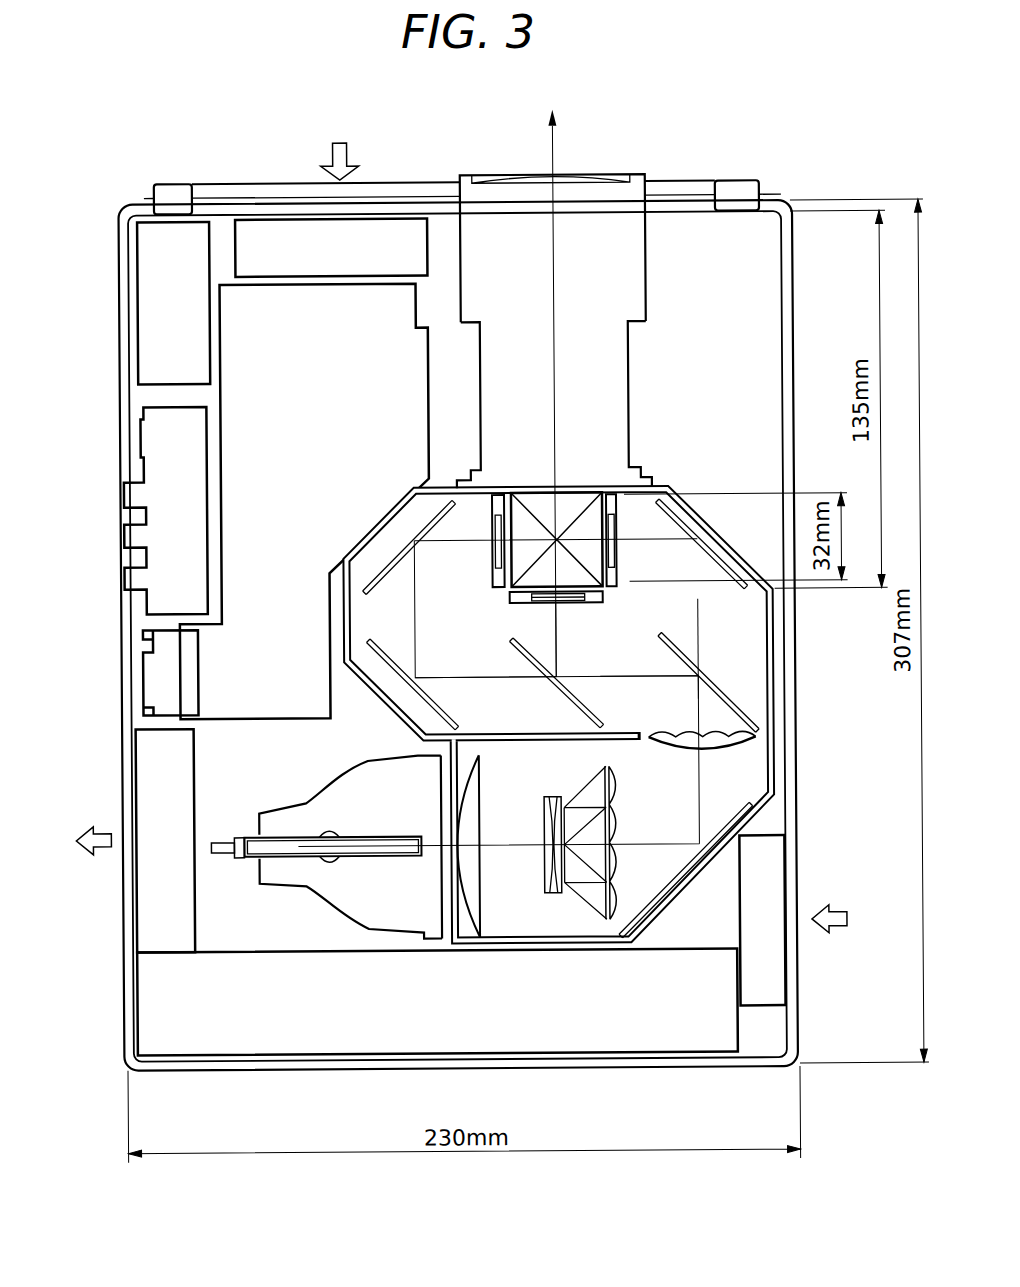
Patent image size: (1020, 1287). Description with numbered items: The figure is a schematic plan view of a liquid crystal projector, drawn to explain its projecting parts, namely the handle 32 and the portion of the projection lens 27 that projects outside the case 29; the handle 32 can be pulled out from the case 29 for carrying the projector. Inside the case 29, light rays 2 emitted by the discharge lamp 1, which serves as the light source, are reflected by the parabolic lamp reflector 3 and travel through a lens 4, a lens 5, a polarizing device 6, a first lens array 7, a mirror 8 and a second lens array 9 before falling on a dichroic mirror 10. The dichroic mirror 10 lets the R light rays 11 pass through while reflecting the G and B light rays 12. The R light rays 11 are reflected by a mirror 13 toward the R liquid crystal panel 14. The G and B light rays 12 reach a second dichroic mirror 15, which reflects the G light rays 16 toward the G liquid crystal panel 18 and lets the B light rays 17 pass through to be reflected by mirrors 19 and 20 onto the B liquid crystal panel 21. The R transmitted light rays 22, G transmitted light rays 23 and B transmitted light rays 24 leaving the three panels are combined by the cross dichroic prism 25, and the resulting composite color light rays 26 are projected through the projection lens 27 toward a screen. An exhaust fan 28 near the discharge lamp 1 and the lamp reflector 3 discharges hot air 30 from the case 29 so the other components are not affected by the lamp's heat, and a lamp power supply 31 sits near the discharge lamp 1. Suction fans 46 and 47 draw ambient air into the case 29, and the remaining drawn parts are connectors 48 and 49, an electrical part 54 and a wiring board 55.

The discharge lamp 1 is at (323, 857).
The light rays 2 is at (352, 848).
The parabolic lamp reflector 3 is at (327, 910).
The lens 4 is at (470, 930).
The lens 5 is at (553, 893).
The polarizing device 6 is at (580, 875).
The first lens array 7 is at (627, 943).
The mirror 8 is at (768, 802).
The second lens array 9 is at (757, 742).
The dichroic mirror 10 is at (740, 708).
The R light rays 11 is at (700, 648).
The G and B light rays 12 is at (643, 678).
The mirror 13 is at (700, 527).
The R liquid crystal panel 14 is at (628, 480).
The dichroic mirror 15 is at (560, 697).
The G light rays 16 is at (560, 618).
The B light rays 17 is at (487, 677).
The G liquid crystal panel 18 is at (603, 598).
The mirror 19 is at (422, 688).
The mirror 20 is at (385, 548).
The B liquid crystal panel 21 is at (498, 493).
The R transmitted light rays 22 is at (590, 493).
The G transmitted light rays 23 is at (515, 586).
The B transmitted light rays 24 is at (512, 493).
The cross dichroic prism 25 is at (562, 493).
The composite color light rays 26 is at (558, 337).
The projection lens 27 is at (640, 248).
The exhaust fan 28 is at (145, 935).
The case 29 is at (126, 975).
The hot air 30 is at (100, 845).
The lamp power supply 31 is at (147, 1012).
The handle 32 is at (385, 183).
The suction fan 46 is at (770, 873).
The suction fan 47 is at (362, 262).
The connector 48 is at (147, 673).
The connector 49 is at (133, 492).
The electrical part 54 is at (150, 287).
The wiring board 55 is at (250, 710).